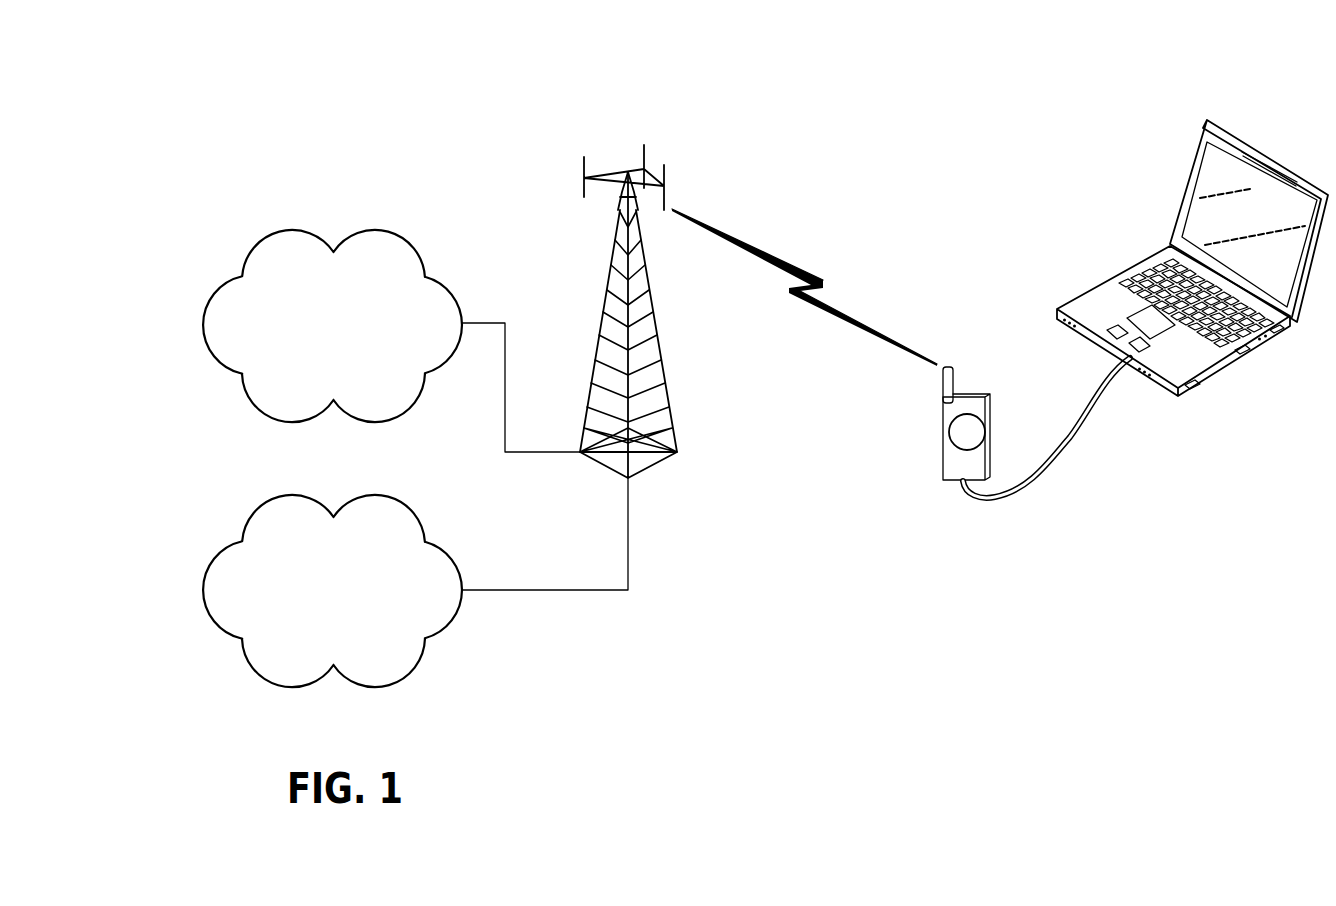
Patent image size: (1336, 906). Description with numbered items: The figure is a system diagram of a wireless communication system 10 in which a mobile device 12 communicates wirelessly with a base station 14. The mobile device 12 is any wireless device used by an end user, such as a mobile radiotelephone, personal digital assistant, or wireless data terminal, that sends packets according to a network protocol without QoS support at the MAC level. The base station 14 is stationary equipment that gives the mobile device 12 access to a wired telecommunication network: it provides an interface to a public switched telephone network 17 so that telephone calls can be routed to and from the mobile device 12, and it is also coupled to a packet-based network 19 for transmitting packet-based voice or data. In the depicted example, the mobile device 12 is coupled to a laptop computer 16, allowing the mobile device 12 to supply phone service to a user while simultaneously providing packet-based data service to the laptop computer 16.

The wireless communication system 10 is at (986, 135).
The mobile device 12 is at (942, 465).
The base station 14 is at (677, 452).
The laptop computer 16 is at (1207, 372).
The public switched telephone network 17 is at (319, 351).
The packet-based network 19 is at (318, 627).